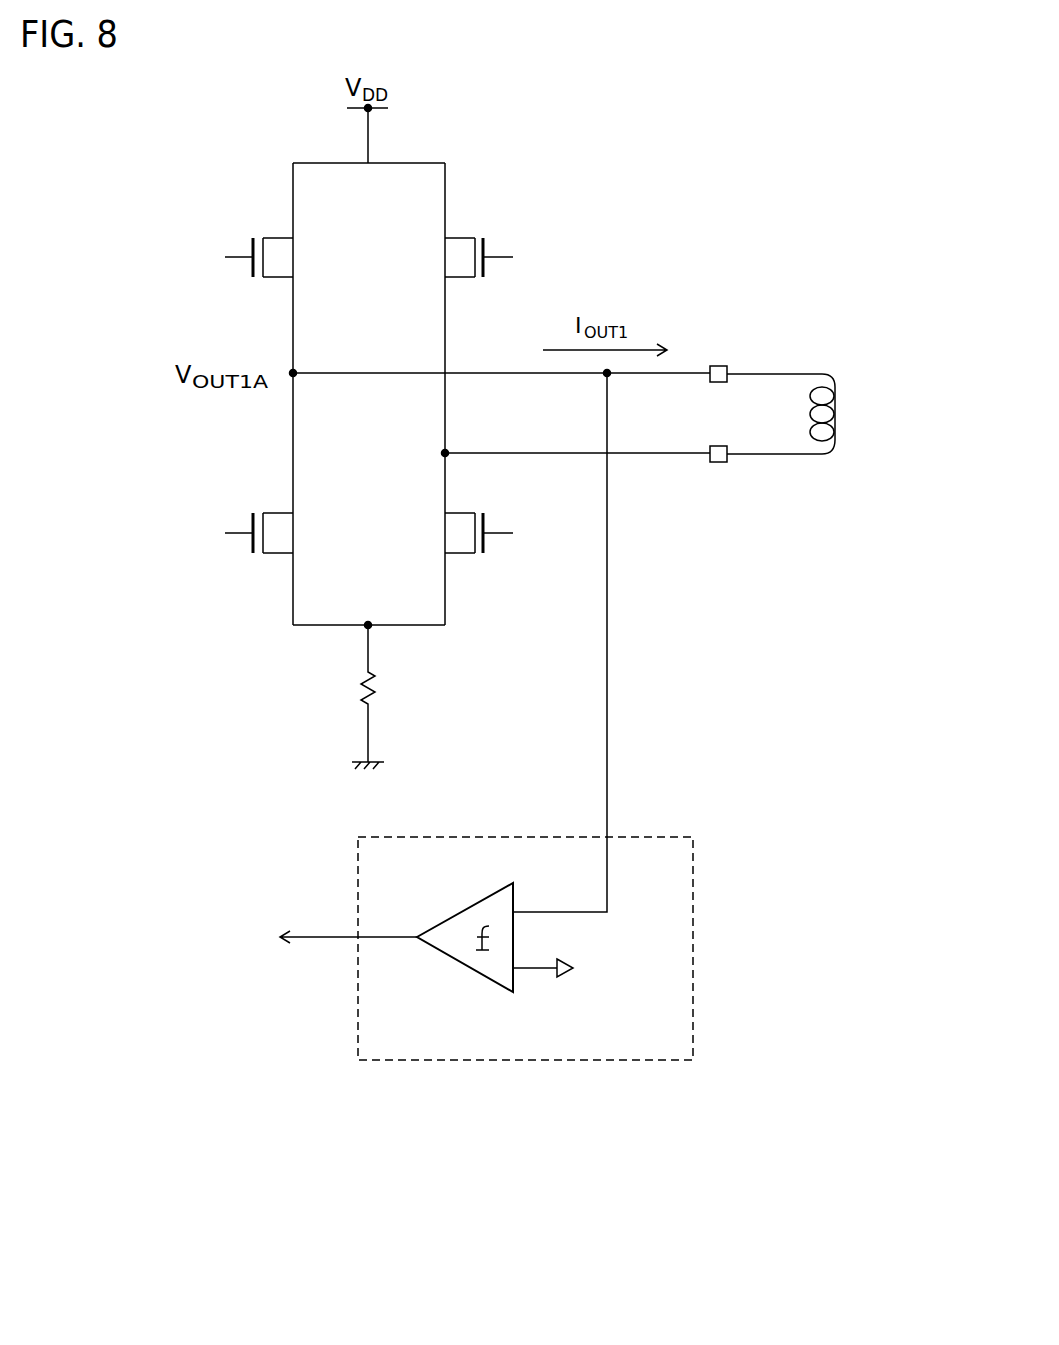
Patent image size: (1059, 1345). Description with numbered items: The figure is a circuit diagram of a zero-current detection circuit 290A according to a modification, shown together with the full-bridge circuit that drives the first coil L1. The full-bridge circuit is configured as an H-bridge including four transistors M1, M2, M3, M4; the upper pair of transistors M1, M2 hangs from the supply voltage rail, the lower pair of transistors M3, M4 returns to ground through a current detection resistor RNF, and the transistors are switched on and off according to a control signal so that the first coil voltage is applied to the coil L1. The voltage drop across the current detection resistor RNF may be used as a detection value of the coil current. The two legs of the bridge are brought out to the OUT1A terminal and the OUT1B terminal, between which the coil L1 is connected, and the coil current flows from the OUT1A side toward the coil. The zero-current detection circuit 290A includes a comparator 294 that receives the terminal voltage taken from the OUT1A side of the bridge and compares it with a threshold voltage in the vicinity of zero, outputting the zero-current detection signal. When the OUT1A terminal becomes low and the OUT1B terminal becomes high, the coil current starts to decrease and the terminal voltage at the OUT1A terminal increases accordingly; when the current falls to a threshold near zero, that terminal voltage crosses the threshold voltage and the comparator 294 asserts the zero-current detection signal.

The comparator 294 is at (470, 968).
The zero-current detection circuit 290A is at (555, 1062).
The first coil L1 is at (838, 395).
The transistor M1 is at (279, 257).
The transistor M2 is at (458, 257).
The transistor M3 is at (279, 533).
The transistor M4 is at (458, 533).
The current detection resistor RNF is at (389, 696).
The OUT1A terminal OUT1A is at (773, 330).
The OUT1B terminal OUT1B is at (717, 463).